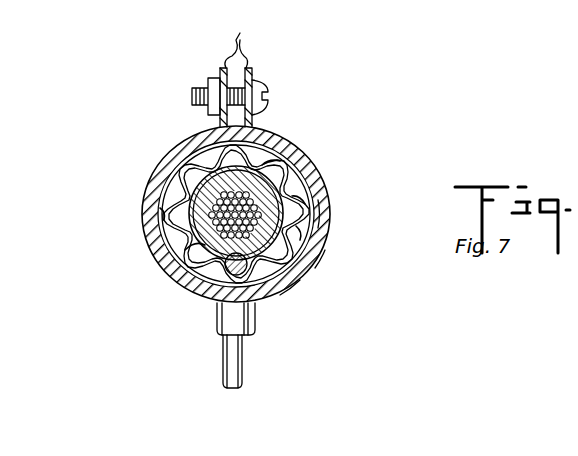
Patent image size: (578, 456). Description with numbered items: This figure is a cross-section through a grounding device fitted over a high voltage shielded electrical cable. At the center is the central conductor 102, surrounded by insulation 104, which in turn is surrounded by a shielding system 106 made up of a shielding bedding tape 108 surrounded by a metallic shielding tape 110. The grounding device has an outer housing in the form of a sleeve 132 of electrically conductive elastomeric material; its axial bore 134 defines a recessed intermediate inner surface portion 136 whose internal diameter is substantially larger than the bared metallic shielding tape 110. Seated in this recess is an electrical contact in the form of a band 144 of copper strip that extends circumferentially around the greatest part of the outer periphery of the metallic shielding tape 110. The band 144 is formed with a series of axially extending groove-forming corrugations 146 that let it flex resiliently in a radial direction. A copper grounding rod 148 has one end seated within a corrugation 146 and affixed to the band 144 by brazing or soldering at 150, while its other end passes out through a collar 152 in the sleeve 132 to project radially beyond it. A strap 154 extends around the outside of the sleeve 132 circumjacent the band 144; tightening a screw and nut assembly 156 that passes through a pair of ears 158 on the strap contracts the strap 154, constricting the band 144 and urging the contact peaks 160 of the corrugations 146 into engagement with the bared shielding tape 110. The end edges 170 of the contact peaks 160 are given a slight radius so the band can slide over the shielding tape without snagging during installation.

The central conductor 102 is at (192, 248).
The insulation 104 is at (200, 202).
The shielding system 106 is at (205, 240).
The shielding bedding tape 108 is at (167, 213).
The metallic shielding tape 110 is at (305, 192).
The sleeve 132 is at (158, 178).
The axial bore 134 is at (162, 167).
The intermediate inner surface portion 136 is at (190, 140).
The band 144 is at (322, 212).
The corrugations 146 is at (300, 233).
The grounding rod 148 is at (238, 372).
The brazing or soldering 150 is at (290, 300).
The collar 152 is at (242, 318).
The strap 154 is at (317, 258).
The screw and nut assembly 156 is at (268, 85).
The ears 158 is at (236, 39).
The contact peaks 160 is at (255, 188).
The end edges 170 is at (263, 160).